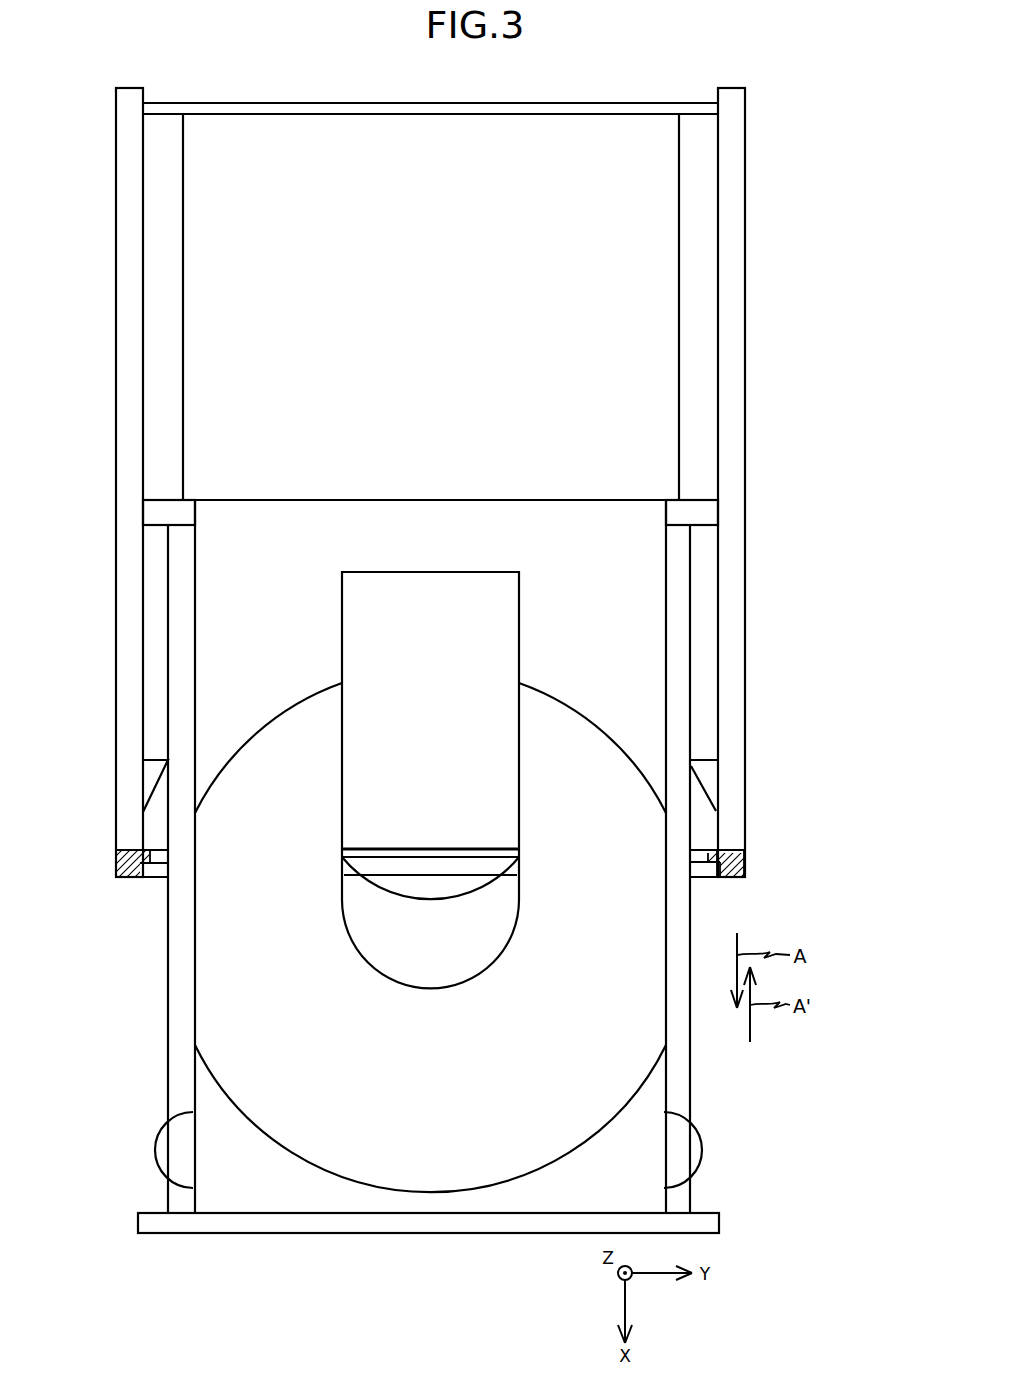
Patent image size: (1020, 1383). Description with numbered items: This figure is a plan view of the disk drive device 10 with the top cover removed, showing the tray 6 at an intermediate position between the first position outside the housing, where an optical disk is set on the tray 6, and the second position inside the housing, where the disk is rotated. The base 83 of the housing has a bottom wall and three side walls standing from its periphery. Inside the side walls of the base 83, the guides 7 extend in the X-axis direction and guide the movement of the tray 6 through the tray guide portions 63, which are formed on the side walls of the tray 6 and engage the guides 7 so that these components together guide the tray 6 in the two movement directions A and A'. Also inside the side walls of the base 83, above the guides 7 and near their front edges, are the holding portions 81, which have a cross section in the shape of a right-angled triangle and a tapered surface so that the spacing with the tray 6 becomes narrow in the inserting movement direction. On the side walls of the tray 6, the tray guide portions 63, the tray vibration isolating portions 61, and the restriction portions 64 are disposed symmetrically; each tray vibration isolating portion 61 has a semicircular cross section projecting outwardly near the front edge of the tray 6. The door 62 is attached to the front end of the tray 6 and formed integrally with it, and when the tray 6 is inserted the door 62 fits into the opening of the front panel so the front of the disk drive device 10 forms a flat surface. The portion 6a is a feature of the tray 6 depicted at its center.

The disk drive device 10 is at (816, 407).
The base 83 is at (120, 262).
The guide 7 is at (157, 350).
The restriction portion 64 is at (162, 517).
The holding portion 81 is at (153, 770).
The tray guide portion 63 is at (177, 915).
The tray vibration isolating portion 61 is at (176, 1148).
The projection 6a is at (516, 661).
The tray 6 is at (304, 1192).
The door 62 is at (509, 1233).